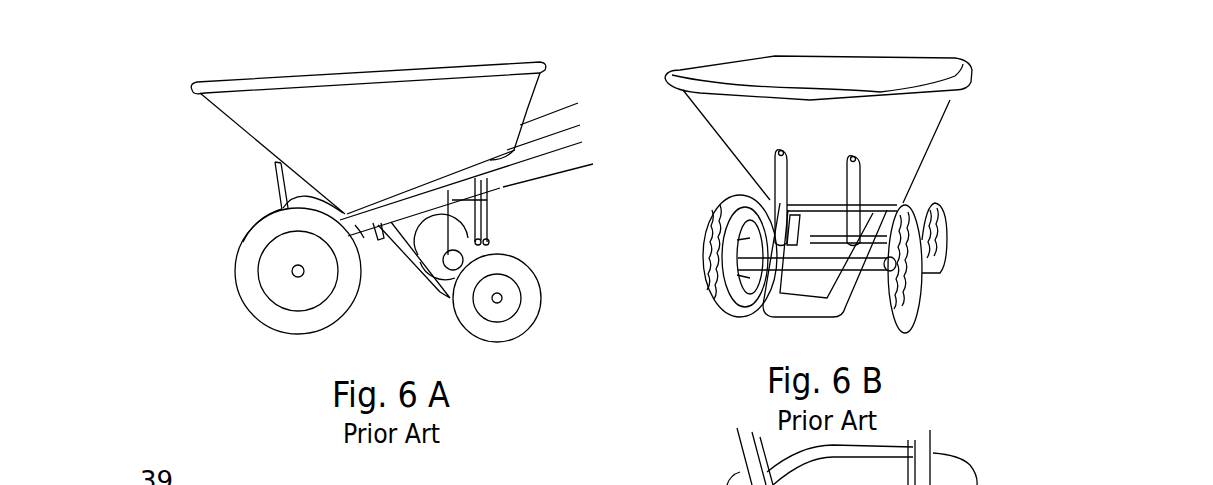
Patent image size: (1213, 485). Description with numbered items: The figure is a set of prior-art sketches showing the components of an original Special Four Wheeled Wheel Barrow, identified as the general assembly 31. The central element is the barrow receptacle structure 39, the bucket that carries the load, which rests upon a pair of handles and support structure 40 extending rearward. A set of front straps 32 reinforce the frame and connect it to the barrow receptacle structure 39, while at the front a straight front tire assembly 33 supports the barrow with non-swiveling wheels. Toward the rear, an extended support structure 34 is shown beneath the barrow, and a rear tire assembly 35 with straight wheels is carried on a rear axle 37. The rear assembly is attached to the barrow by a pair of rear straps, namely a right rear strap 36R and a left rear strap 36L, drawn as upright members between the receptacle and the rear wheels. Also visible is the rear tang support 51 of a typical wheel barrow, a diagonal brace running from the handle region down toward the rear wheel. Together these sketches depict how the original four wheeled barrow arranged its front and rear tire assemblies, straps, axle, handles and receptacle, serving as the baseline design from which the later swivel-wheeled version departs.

In FIG. 6A, the general assembly of the Special Big Four Wheeler Swivel Wheeled Wheel Barrow 31 is at (243, 369).
In FIG. 6B, the general assembly of the Special Big Four Wheeler Swivel Wheeled Wheel Barrow 31 is at (995, 273).
In FIG. 6A, the front straps 32 is at (277, 188).
In FIG. 6B, the front straps 32 is at (863, 188).
In FIG. 6A, the straight front tire assembly 33 is at (250, 287).
In FIG. 6B, the straight front tire assembly 33 is at (913, 303).
In FIG. 6B, the support structure (extended) 34 is at (777, 310).
In FIG. 6A, the rear tire assembly 35 is at (507, 320).
In FIG. 6B, the rear tire assembly 35 is at (947, 237).
In FIG. 6A, the left rear strap 36L is at (487, 227).
In FIG. 6B, the right rear strap 36R is at (1012, 484).
In FIG. 6B, the rear axle 37 is at (885, 484).
In FIG. 6A, the barrow receptacle structure 39 is at (262, 115).
In FIG. 6B, the barrow receptacle structure 39 is at (900, 128).
In FIG. 6B, the handles and support structure 40 is at (750, 447).
In FIG. 6A, the rear tang support 51 is at (422, 275).
In FIG. 6B, the rear tang support 51 is at (952, 484).